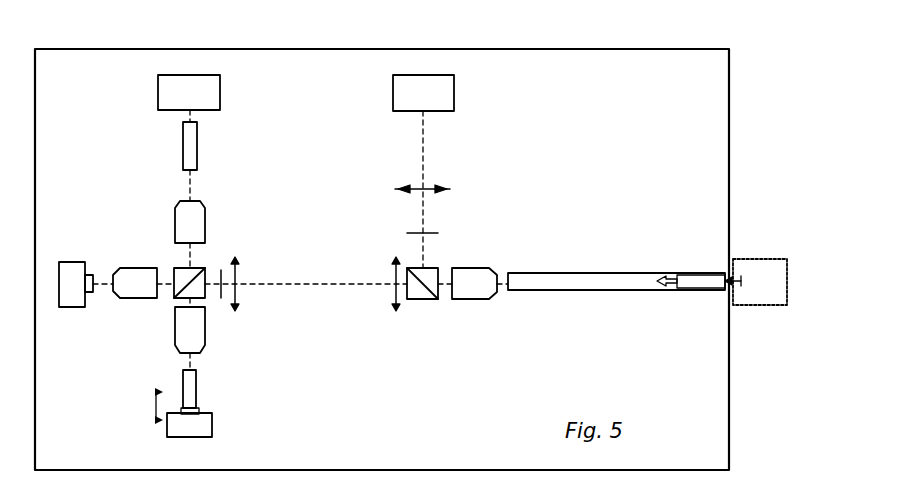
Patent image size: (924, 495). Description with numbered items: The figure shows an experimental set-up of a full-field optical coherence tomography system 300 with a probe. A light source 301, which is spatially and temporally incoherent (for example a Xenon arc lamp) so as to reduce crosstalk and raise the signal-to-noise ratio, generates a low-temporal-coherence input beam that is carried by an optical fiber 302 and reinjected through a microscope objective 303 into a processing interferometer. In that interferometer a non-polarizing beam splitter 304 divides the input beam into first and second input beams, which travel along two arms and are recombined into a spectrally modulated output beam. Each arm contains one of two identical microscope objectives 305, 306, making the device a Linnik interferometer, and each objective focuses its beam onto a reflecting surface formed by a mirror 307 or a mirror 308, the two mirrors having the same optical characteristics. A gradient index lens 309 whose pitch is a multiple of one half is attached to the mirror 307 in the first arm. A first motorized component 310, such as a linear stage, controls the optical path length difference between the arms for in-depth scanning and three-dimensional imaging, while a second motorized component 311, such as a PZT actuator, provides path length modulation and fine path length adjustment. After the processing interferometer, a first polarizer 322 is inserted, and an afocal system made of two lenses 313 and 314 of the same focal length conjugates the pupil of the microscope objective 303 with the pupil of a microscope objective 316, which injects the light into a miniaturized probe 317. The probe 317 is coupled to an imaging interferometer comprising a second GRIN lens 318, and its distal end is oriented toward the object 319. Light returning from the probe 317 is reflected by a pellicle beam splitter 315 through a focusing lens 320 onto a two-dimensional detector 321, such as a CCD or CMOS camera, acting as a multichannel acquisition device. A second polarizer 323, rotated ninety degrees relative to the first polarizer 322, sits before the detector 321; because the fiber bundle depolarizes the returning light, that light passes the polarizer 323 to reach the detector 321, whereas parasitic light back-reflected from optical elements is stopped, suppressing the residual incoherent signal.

The FF-OCT system 300 is at (110, 49).
The light source 301 is at (221, 91).
The optical fiber 302 is at (183, 145).
The microscope objective 303 is at (175, 220).
The beam splitter 304 is at (187, 282).
The microscope objective 305 is at (197, 335).
The microscope objective 306 is at (140, 292).
The mirror 307 is at (200, 411).
The mirror 308 is at (88, 293).
The gradient index-type (GRIN) lens 309 is at (190, 390).
The first motorized component 310 is at (86, 244).
The second motorized component 311 is at (190, 432).
The lens 313 is at (238, 310).
The lens 314 is at (393, 308).
The beam splitter 315 is at (425, 300).
The microscope objective 316 is at (465, 287).
The probe 317 is at (597, 283).
The second GRIN lens 318 is at (694, 288).
The object 319 is at (750, 261).
The focusing lens 320 is at (442, 185).
The 2D detector 321 is at (436, 101).
The first polarizer 322 is at (218, 280).
The second polarizer 323 is at (439, 233).